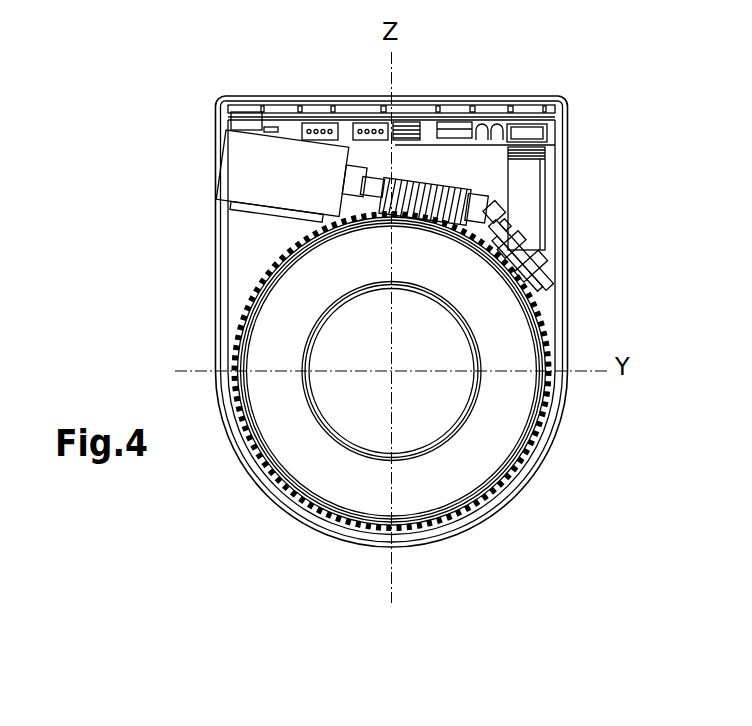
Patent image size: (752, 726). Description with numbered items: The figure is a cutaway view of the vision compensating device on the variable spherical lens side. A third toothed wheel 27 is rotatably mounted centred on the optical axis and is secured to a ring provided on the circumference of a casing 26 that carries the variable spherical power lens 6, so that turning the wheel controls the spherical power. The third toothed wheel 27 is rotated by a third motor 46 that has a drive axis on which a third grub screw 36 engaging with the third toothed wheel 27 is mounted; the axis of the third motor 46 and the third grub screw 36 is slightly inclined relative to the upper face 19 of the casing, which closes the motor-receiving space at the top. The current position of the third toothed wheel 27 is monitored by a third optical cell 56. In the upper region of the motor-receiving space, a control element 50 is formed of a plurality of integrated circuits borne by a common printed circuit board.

The variable spherical power lens 6 is at (343, 410).
The upper face 19 is at (286, 105).
The casing 26 is at (515, 403).
The third toothed wheel 27 is at (252, 297).
The third grub screw 36 is at (450, 186).
The third motor 46 is at (245, 155).
The control element 50 is at (450, 118).
The third optical cell 56 is at (545, 250).